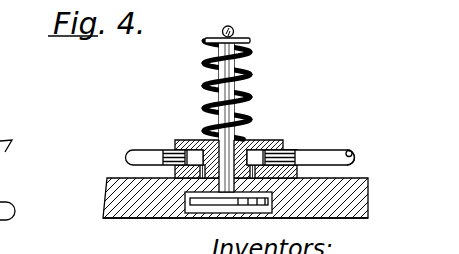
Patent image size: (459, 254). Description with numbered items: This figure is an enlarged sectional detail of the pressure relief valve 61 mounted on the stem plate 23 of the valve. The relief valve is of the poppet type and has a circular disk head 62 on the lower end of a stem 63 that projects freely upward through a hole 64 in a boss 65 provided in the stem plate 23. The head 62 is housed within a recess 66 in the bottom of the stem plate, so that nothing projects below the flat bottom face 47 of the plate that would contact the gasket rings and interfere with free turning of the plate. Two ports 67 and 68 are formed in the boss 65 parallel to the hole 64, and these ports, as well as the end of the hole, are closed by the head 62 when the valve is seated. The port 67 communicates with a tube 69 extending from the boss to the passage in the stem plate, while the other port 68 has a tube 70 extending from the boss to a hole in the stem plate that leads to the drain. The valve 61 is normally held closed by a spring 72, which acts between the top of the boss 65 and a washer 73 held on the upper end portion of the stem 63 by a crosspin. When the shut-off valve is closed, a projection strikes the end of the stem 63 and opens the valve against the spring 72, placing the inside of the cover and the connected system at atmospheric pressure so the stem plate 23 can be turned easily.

The stem plate 23 is at (107, 192).
The flat bottom face 47 is at (122, 221).
The pressure relief valve 61 is at (259, 213).
The circular disk head 62 is at (198, 204).
The stem 63 is at (233, 28).
The hole 64 is at (259, 140).
The boss 65 is at (283, 143).
The recess 66 is at (183, 201).
The port 67 is at (202, 168).
The port 68 is at (290, 167).
The tube 69 is at (142, 156).
The tube 70 is at (332, 154).
The spring 72 is at (250, 82).
The washer 73 is at (250, 41).